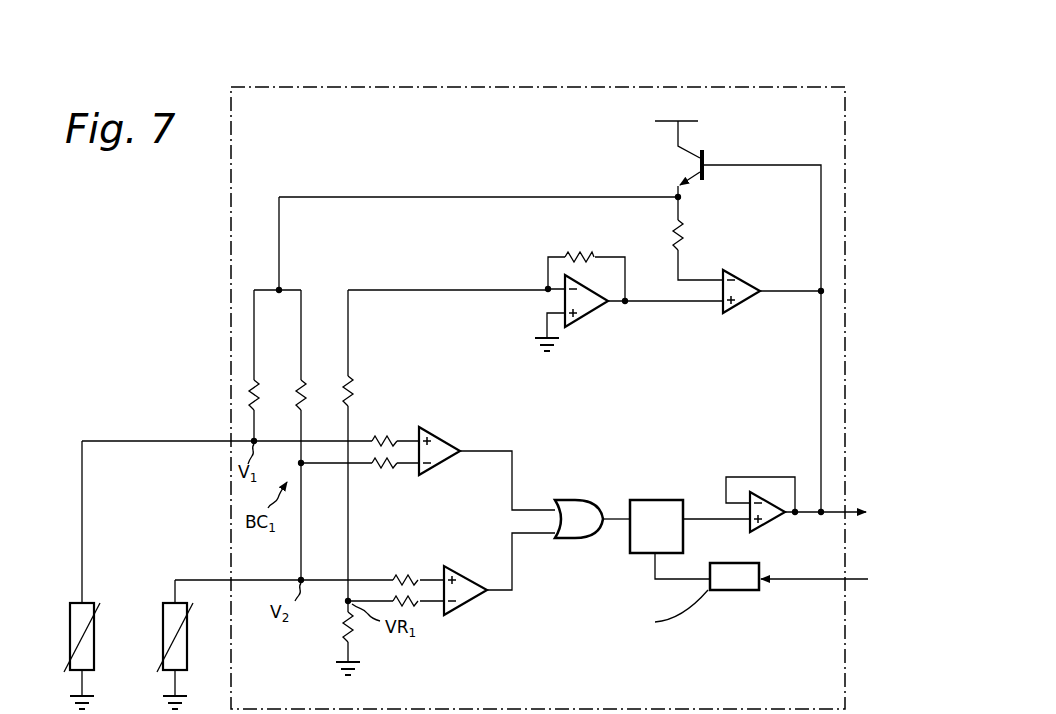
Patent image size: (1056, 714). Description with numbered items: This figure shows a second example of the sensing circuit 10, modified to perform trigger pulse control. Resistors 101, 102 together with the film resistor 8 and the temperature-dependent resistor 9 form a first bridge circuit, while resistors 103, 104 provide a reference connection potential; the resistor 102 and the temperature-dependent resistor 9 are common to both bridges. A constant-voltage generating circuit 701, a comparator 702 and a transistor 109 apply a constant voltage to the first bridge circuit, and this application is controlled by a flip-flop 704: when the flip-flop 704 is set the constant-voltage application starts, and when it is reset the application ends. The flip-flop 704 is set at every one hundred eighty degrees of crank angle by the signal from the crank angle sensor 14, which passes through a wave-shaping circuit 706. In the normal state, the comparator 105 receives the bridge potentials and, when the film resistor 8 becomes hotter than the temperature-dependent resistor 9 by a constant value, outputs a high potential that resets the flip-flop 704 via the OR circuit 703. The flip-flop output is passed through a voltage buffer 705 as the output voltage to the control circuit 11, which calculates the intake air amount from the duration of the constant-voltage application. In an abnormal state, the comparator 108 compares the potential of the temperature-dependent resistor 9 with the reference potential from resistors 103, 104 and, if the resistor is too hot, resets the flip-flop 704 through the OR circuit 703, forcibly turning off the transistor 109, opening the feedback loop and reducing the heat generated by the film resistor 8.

The sensing circuit 10 is at (847, 123).
The film resistor 8 is at (95, 606).
The temperature-dependent resistor 9 is at (188, 648).
The resistor 101 is at (262, 388).
The resistor 102 is at (309, 388).
The resistor 103 is at (357, 391).
The resistor 104 is at (358, 630).
The comparator 105 is at (445, 465).
The comparator 108 is at (470, 604).
The transistor 109 is at (706, 175).
The constant-voltage generating circuit 701 is at (588, 320).
The comparator 702 is at (750, 304).
The OR circuit 703 is at (590, 541).
The flip-flop 704 is at (660, 499).
The voltage buffer 705 is at (775, 520).
The wave-shaping circuit 706 is at (732, 592).
The control circuit 11 is at (915, 510).
The crank angle sensor 14 is at (885, 601).